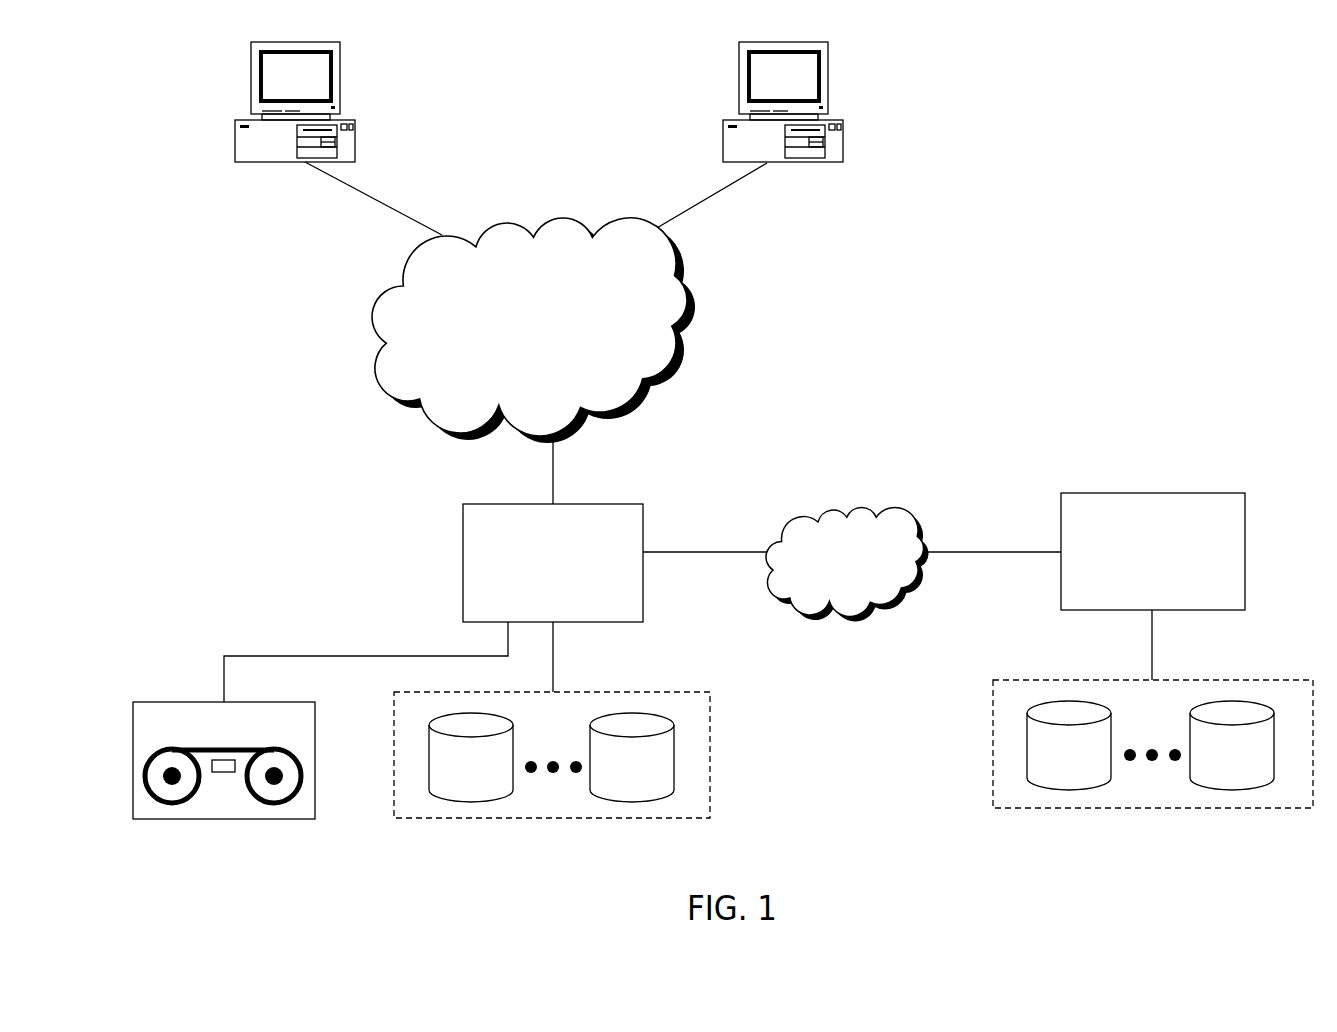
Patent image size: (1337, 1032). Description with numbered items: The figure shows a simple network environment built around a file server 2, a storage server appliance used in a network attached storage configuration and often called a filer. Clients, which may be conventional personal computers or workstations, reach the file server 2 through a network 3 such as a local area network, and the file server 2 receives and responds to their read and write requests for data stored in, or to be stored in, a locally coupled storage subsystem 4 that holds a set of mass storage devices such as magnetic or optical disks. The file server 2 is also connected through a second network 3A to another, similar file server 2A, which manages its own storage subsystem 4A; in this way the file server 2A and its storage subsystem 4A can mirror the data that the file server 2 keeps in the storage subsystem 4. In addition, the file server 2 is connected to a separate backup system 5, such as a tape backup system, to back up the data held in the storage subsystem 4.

The file server 2 is at (627, 538).
The file server 2A is at (1241, 526).
The network 3 is at (646, 259).
The network 3A is at (911, 549).
The storage subsystem 4 is at (698, 718).
The storage subsystem 4A is at (1298, 706).
The backup system 5 is at (296, 737).